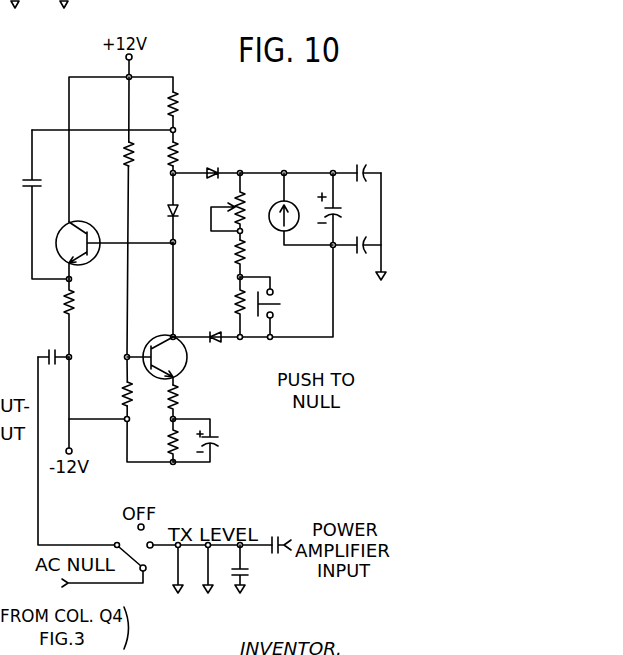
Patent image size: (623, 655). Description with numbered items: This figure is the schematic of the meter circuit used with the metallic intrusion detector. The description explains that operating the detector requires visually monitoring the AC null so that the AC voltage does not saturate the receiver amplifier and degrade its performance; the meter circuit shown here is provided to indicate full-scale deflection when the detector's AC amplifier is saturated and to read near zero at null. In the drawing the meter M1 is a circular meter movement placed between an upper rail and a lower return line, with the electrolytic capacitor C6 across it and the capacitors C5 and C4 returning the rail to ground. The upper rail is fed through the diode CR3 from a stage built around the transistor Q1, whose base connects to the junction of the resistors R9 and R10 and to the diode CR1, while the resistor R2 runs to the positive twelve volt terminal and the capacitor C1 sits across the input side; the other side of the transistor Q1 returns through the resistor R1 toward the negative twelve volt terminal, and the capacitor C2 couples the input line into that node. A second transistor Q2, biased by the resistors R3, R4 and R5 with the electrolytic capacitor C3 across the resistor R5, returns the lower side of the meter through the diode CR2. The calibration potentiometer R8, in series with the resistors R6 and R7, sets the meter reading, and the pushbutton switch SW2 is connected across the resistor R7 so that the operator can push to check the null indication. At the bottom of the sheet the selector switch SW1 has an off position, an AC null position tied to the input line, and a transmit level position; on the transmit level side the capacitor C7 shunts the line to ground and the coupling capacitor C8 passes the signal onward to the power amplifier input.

The capacitor C1 is at (40, 204).
The capacitor C2 is at (53, 347).
The capacitor C3 is at (210, 440).
The capacitor C4 is at (357, 257).
The capacitor C5 is at (366, 163).
The capacitor C6 is at (273, 255).
The capacitor C7 is at (254, 569).
The capacitor C8 is at (268, 530).
The resistor R1 is at (83, 318).
The resistor R2 is at (115, 154).
The resistor R3 is at (114, 393).
The resistor R4 is at (188, 402).
The resistor R5 is at (160, 440).
The resistor R6 is at (253, 258).
The resistor R7 is at (226, 307).
The calibration potentiometer R8 is at (229, 206).
The resistor R9 is at (188, 104).
The resistor R10 is at (156, 154).
The transistor Q1 is at (114, 242).
The transistor Q2 is at (157, 352).
The diode CR1 is at (160, 207).
The diode CR2 is at (216, 347).
The diode CR3 is at (218, 164).
The meter M1 is at (301, 209).
The switch SW1 is at (120, 555).
The push-to-null switch SW2 is at (278, 307).